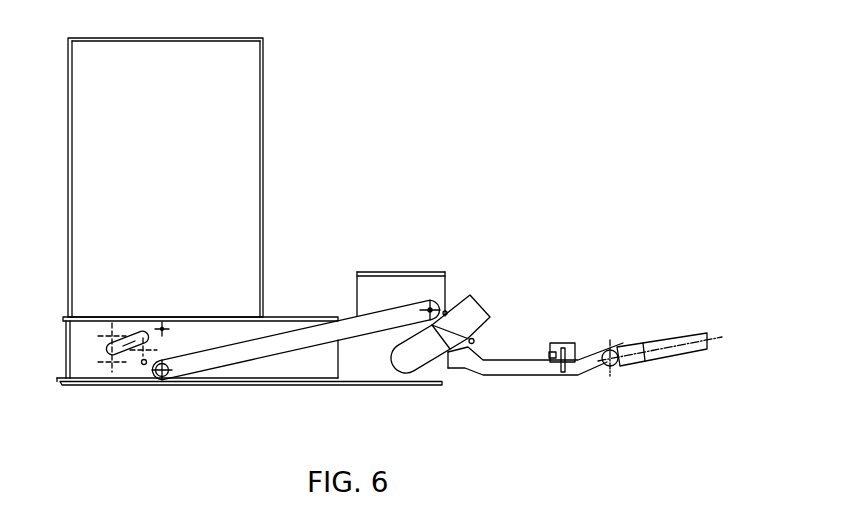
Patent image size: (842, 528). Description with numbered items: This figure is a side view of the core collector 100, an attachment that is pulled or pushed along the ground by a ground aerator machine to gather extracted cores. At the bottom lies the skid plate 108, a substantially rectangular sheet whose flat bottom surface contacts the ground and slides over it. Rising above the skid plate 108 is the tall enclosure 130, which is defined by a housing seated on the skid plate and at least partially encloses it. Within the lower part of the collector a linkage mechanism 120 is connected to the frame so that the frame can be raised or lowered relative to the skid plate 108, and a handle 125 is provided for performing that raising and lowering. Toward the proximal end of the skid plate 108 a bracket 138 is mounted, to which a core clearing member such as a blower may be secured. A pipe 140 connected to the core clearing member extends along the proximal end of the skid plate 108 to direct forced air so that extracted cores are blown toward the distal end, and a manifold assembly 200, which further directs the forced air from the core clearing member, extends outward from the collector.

The core collector 100 is at (427, 90).
The skid plate 108 is at (375, 385).
The linkage mechanism 120 is at (313, 333).
The handle 125 is at (128, 348).
The enclosure 130 is at (184, 182).
The bracket 138 is at (407, 283).
The pipe 140 is at (468, 313).
The manifold assembly 200 is at (517, 368).